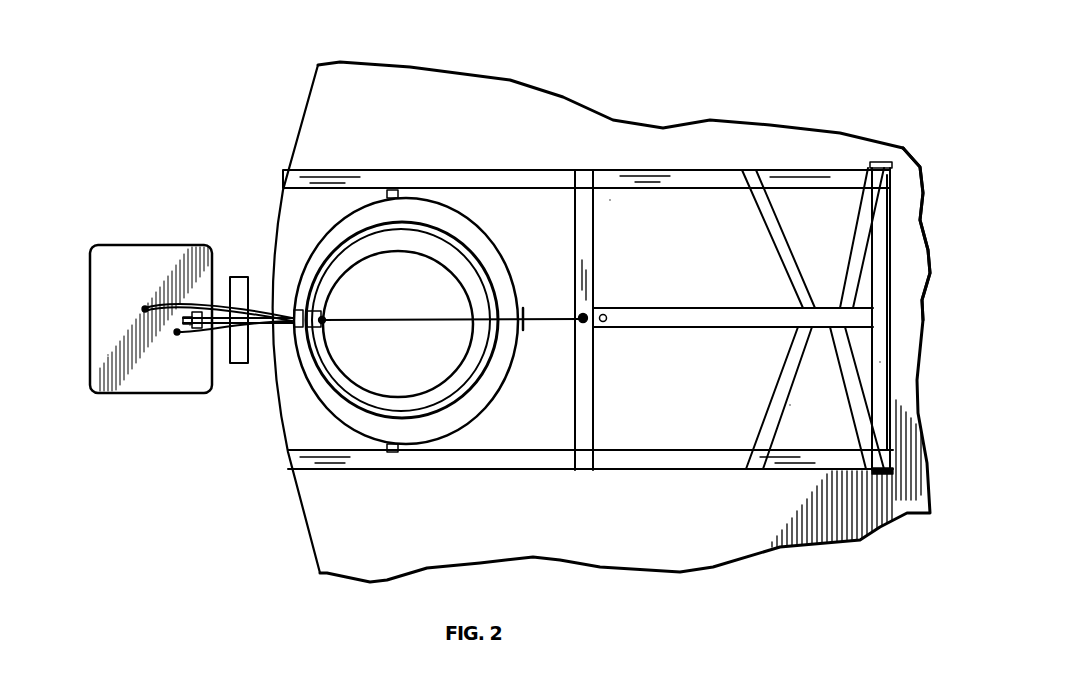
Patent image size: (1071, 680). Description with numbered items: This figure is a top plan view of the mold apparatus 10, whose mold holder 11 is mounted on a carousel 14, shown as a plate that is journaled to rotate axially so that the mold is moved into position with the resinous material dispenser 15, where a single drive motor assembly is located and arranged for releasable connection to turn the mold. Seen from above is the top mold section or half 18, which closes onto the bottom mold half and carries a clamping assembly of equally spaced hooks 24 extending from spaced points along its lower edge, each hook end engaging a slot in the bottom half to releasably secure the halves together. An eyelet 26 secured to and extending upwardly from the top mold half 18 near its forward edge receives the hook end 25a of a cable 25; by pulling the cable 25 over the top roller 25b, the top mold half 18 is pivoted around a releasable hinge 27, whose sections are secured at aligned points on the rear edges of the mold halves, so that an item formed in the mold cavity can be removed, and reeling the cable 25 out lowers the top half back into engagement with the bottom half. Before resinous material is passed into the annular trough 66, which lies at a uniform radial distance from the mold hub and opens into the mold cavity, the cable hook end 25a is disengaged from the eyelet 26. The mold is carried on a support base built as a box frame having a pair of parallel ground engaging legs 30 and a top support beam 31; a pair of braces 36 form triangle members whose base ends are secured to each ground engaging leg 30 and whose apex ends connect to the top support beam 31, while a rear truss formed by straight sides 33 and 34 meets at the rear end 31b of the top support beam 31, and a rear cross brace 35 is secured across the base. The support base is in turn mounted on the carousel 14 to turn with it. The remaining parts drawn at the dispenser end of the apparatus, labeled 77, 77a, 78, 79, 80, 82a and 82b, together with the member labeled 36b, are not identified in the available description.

The mold apparatus 10 is at (183, 159).
The mold holder 11 is at (902, 281).
The carousel 14 is at (446, 125).
The resinous material dispenser 15 is at (115, 244).
The top mold section or half 18 is at (322, 255).
The hooks 24 is at (393, 190).
The cable 25 is at (390, 318).
The hook end 25a is at (325, 327).
The top roller 25b is at (586, 312).
The eyelet 26 is at (323, 308).
The releasable hinge 27 is at (527, 310).
The ground engaging legs 30 is at (636, 178).
The top support beam 31 is at (708, 322).
The rear end of top support beam 31b is at (850, 318).
The straight side 33 is at (790, 215).
The straight side 34 is at (868, 207).
The rear cross brace 35 is at (882, 362).
The braces 36 is at (583, 218).
The lower brace 36b is at (790, 405).
The annular trough 66 is at (292, 310).
The drive shaft 77 is at (220, 330).
The shaft support 77a is at (250, 340).
The coupling 78 is at (195, 330).
The coupling nut 79 is at (190, 325).
The motor 80 is at (110, 355).
The upper lead wire 82a is at (167, 303).
The lower lead wire 82b is at (200, 337).